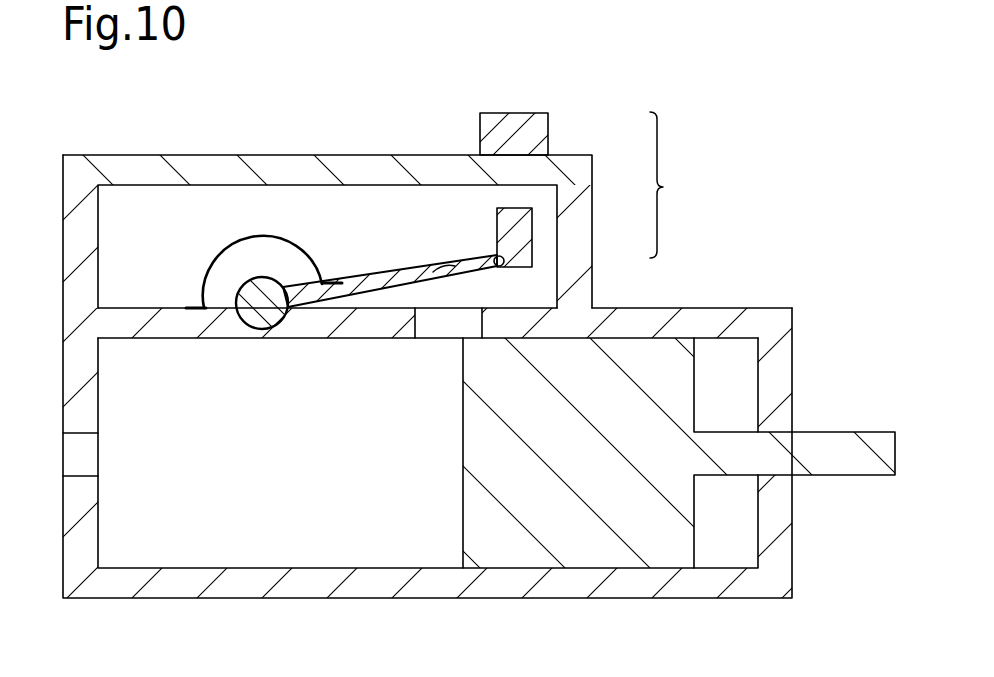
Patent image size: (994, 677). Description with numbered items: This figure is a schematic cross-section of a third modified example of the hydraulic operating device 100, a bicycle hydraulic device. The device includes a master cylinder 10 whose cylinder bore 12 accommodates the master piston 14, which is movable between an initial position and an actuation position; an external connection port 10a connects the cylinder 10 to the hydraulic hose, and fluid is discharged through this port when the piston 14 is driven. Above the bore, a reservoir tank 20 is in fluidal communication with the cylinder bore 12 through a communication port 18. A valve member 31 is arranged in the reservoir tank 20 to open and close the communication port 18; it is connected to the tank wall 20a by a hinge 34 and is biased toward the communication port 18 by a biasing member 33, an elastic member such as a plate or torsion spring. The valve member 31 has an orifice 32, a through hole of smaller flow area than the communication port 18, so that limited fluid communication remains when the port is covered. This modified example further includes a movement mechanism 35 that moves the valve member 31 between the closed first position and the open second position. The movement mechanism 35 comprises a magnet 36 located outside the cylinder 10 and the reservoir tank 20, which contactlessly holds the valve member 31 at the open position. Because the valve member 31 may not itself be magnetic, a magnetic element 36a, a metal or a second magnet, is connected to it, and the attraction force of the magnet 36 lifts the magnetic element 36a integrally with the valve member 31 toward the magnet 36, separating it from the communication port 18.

The hydraulic operating device 100 is at (761, 119).
The master cylinder 10 is at (697, 317).
The external connection port 10a is at (70, 467).
The master cylinder bore 12 is at (347, 339).
The communication port 18 is at (425, 330).
The master piston 14 is at (587, 557).
The reservoir tank 20 is at (580, 292).
The tank wall 20a is at (133, 307).
The valve member 31 is at (392, 271).
The orifice 32 is at (447, 267).
The biasing member 33 is at (308, 237).
The hinge 34 is at (266, 279).
The movement mechanism 35 is at (674, 185).
The magnet 36 is at (533, 141).
The magnetic element 36a is at (526, 237).